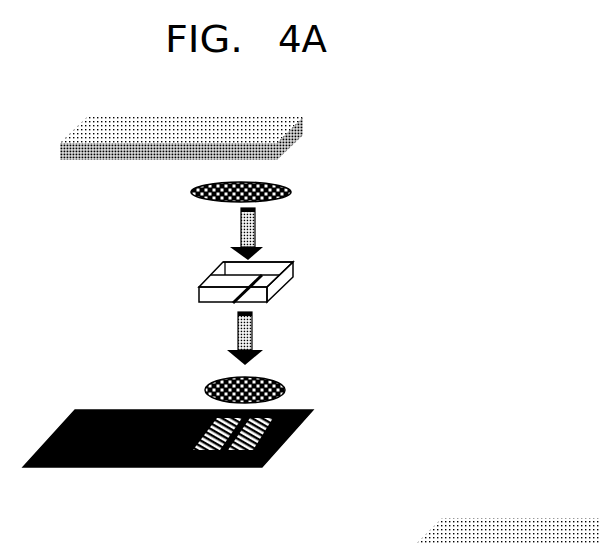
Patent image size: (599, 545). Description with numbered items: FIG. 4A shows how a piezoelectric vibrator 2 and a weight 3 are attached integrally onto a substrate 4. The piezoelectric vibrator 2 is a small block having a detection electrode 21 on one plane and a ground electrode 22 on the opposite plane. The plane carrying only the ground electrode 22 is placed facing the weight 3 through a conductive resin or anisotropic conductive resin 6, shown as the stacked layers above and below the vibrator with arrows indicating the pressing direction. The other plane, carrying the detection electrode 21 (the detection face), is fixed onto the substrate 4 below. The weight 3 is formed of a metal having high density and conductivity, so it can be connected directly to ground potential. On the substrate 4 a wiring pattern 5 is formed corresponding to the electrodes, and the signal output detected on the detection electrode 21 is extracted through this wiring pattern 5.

The piezoelectric vibrator 2 is at (280, 290).
The weight 3 is at (273, 130).
The substrate 4 is at (212, 467).
The wiring pattern 5 is at (326, 452).
The conductive resin or anisotropic conductive resin 6 is at (380, 292).
The detection electrode 21 is at (213, 304).
The ground electrode 22 is at (212, 266).